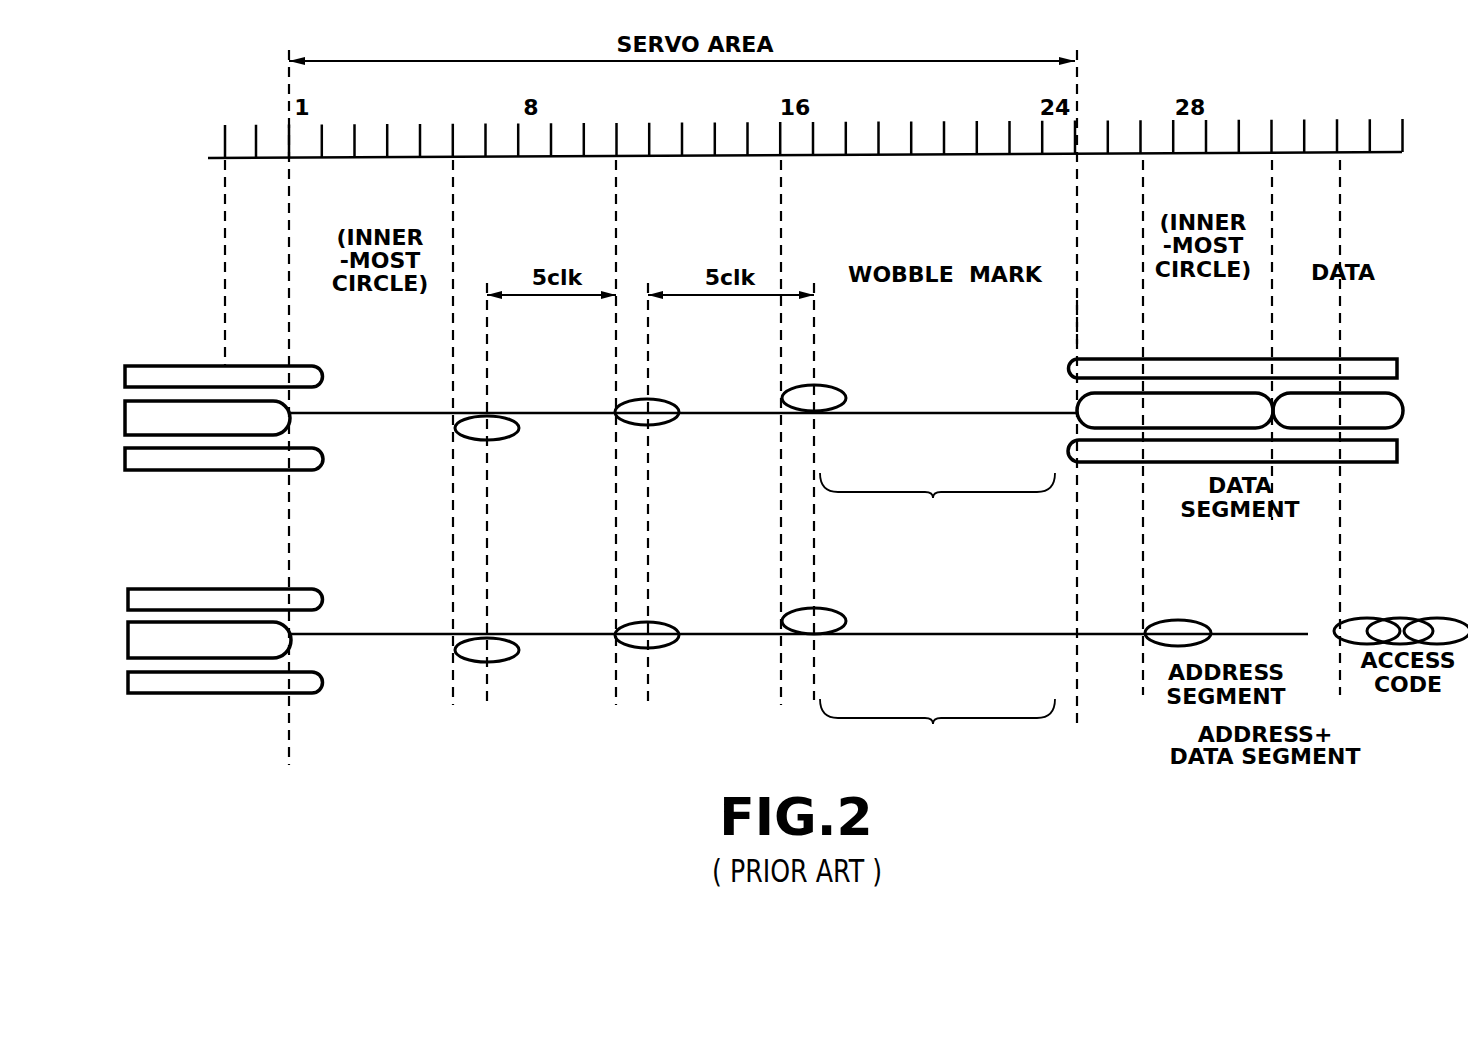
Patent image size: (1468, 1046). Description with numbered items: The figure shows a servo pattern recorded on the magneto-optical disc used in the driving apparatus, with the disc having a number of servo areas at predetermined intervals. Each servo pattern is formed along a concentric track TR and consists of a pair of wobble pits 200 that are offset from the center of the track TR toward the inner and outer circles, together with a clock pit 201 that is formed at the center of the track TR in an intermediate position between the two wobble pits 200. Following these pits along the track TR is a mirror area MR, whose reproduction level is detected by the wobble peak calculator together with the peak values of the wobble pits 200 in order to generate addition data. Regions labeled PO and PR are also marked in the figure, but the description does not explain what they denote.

The wobble pits 200 is at (826, 412).
The clock pit 201 is at (668, 687).
The concentric track TR is at (1040, 675).
The mirror area MR is at (937, 615).
The preamble offset region PO is at (225, 298).
The preamble region PR is at (1272, 291).